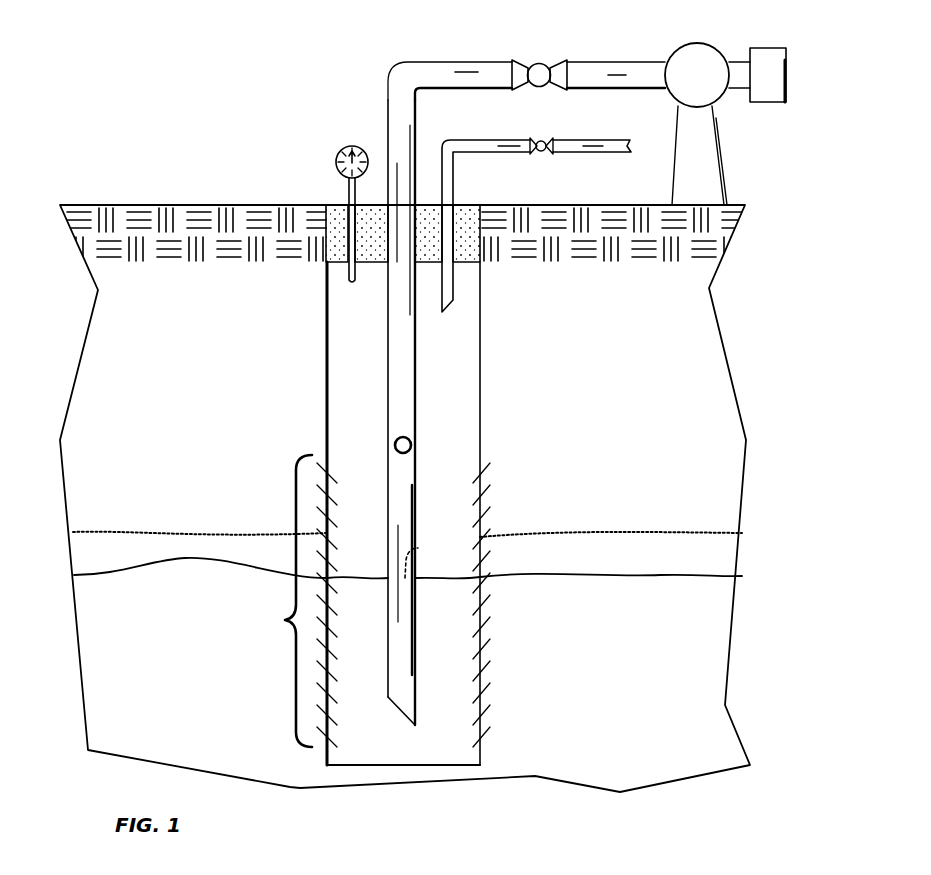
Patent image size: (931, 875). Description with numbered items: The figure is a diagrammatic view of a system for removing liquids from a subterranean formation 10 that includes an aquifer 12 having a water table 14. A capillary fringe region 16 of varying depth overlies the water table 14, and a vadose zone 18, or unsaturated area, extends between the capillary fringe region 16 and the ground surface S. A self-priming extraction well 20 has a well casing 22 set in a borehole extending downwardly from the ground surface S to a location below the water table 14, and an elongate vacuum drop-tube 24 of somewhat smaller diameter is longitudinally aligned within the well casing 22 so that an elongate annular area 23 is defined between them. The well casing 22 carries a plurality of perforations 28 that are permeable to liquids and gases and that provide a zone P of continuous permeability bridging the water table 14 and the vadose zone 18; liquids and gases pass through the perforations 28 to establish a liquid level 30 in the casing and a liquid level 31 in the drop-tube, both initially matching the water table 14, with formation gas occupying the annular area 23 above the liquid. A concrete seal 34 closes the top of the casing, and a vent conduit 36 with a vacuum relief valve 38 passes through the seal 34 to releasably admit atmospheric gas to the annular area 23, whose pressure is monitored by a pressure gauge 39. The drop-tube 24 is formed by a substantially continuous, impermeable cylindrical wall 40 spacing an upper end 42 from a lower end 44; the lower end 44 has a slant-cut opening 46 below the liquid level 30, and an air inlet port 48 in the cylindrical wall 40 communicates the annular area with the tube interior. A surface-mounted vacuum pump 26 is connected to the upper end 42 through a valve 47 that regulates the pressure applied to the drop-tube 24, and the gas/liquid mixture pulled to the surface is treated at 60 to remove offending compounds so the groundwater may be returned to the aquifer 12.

The subterranean formation 10 is at (190, 427).
The aquifer 12 is at (662, 643).
The water table 14 is at (592, 575).
The capillary fringe region 16 is at (188, 545).
The vadose zone 18 is at (232, 363).
The self-priming extraction well 20 is at (339, 110).
The well casing 22 is at (322, 318).
The annular area 23 is at (377, 428).
The vacuum drop-tube 24 is at (470, 60).
The vacuum pump 26 is at (708, 58).
The perforations 28 is at (486, 494).
The liquid level 30 is at (362, 575).
The liquid level 31 is at (418, 548).
The concrete seal 34 is at (336, 201).
The vent conduit 36 is at (500, 134).
The vacuum relief valve 38 is at (543, 152).
The pressure gauge 39 is at (336, 156).
The cylindrical wall 40 is at (418, 396).
The upper end 42 is at (500, 60).
The lower end 44 is at (418, 675).
The opening 46 is at (404, 712).
The valve 47 is at (545, 63).
The air inlet port 48 is at (410, 440).
The surface treatment 60 is at (770, 58).
The ground surface S is at (148, 204).
The zone of continuous permeability P is at (291, 601).